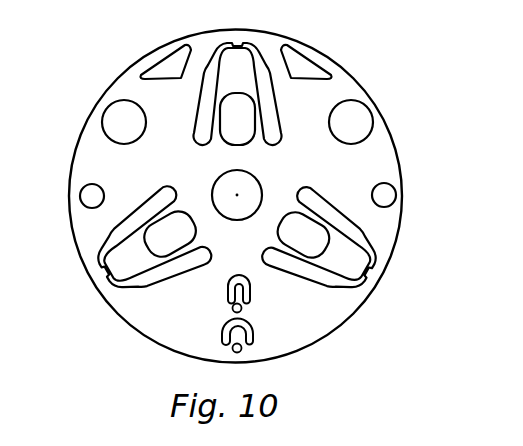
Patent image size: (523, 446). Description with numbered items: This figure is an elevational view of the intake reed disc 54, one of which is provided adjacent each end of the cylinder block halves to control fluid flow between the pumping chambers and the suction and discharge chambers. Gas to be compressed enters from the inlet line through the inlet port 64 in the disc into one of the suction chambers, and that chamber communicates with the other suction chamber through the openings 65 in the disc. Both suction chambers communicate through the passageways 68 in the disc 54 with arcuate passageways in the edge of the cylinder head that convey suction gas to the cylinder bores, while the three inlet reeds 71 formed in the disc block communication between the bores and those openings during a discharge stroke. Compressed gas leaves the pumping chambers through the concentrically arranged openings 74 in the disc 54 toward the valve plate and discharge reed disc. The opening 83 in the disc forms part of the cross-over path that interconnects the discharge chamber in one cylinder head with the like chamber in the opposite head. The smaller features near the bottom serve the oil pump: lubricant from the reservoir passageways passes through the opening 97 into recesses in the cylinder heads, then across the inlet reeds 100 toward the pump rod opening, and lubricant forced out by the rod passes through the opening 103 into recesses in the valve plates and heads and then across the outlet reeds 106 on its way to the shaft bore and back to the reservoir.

The intake reed disc 54 is at (399, 150).
The inlet reeds 71 is at (239, 62).
The openings 74 is at (246, 137).
The openings 65 is at (172, 58).
The opening 83 is at (106, 116).
The inlet port 64 is at (353, 103).
The passageways 68 is at (80, 200).
The outlet reeds 106 is at (227, 288).
The opening 103 is at (242, 307).
The inlet reeds 100 is at (222, 334).
The openings 97 is at (243, 348).